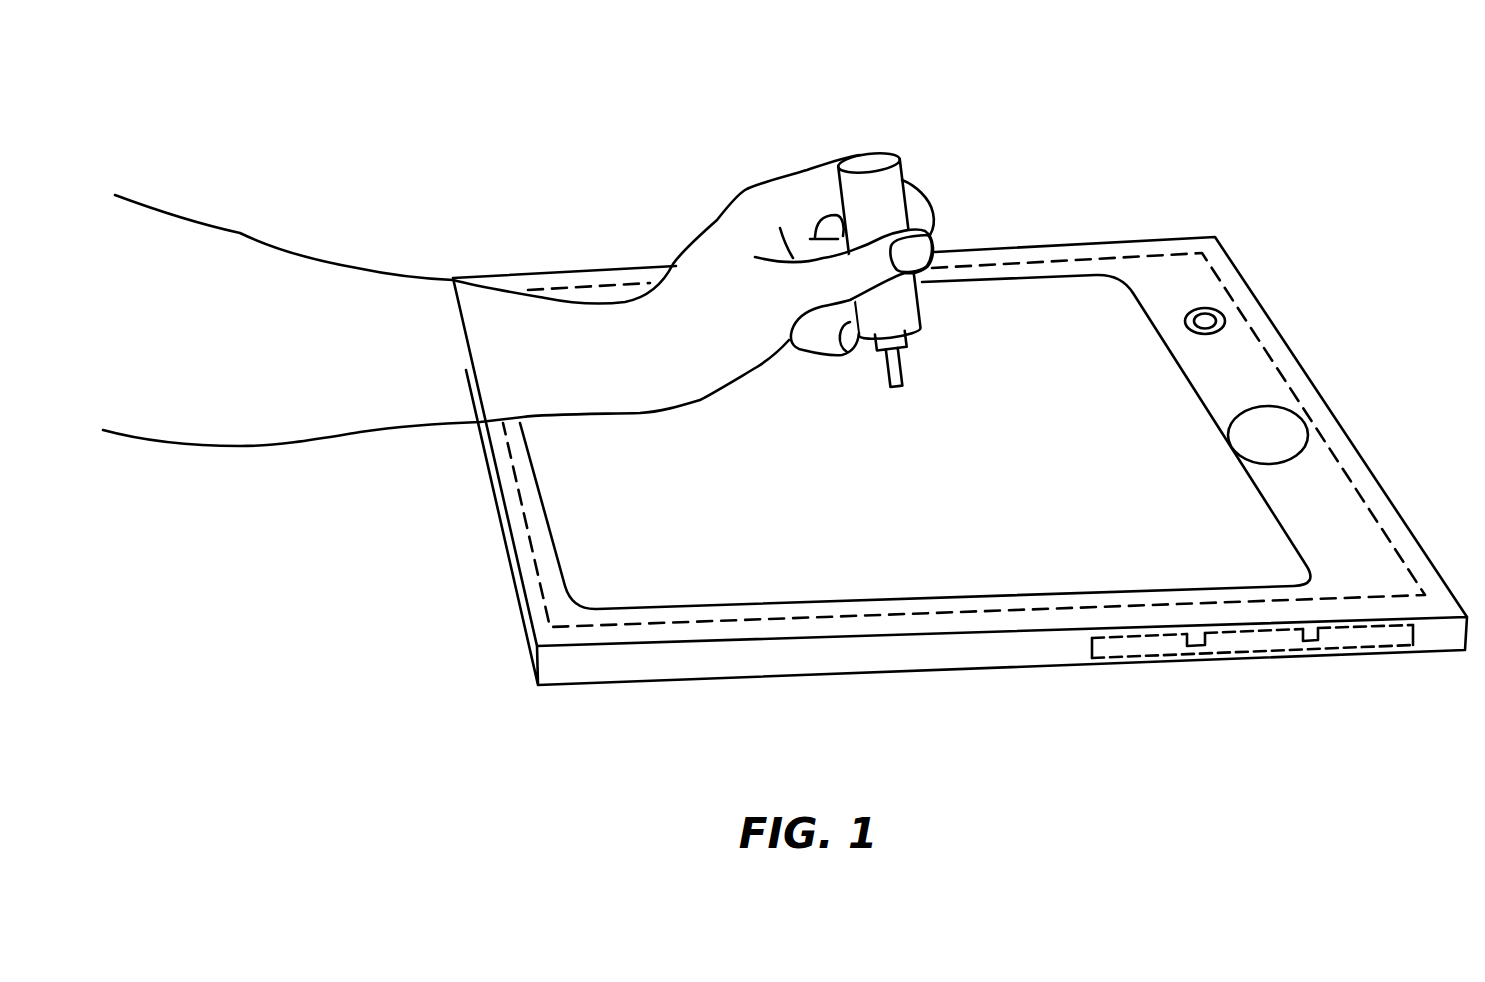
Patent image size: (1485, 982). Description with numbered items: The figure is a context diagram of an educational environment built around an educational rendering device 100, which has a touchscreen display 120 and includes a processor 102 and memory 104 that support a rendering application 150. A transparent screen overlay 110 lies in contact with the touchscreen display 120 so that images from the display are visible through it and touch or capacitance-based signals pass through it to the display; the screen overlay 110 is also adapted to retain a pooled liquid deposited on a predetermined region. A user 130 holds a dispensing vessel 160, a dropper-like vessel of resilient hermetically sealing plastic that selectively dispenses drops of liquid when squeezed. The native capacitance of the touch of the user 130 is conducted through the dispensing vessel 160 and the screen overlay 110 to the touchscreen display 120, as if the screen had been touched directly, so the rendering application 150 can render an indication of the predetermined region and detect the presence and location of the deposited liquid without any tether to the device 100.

The educational rendering device 100 is at (785, 401).
The processor 102 is at (1255, 641).
The memory 104 is at (1367, 639).
The screen overlay 110 is at (1347, 474).
The touchscreen display 120 is at (1072, 404).
The user 130 is at (717, 244).
The rendering application 150 is at (1143, 648).
The dispensing vessel 160 is at (872, 193).